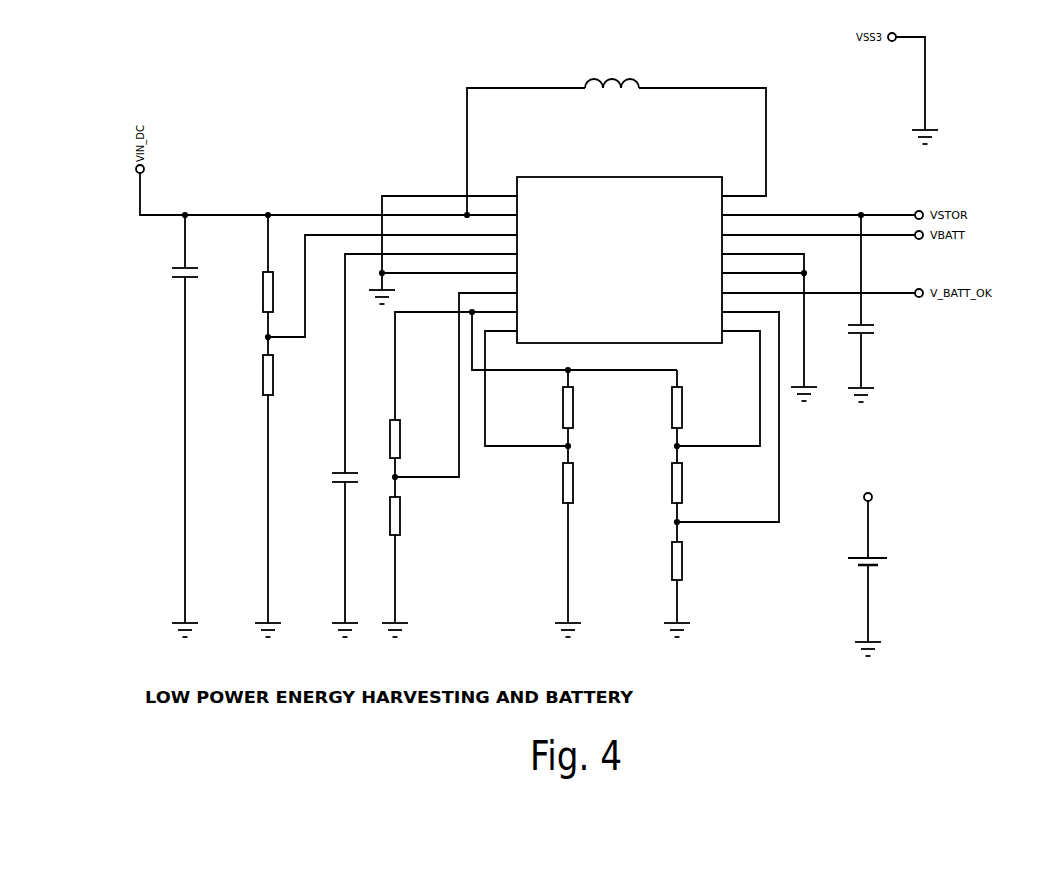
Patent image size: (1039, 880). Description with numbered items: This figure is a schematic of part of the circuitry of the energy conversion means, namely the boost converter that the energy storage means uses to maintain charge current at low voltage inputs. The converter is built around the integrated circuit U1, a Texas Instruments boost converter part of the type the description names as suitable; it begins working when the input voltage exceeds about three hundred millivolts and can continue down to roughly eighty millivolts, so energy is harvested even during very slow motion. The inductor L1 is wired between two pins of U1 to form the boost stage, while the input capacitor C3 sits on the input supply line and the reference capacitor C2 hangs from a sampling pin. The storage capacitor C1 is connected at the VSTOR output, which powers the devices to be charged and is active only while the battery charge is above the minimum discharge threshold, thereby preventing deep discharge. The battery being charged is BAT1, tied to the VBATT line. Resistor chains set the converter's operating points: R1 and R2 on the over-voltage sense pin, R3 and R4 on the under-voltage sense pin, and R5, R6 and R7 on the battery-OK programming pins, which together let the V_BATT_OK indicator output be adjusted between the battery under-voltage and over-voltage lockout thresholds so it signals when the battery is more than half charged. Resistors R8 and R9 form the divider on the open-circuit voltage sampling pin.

The BQ25504RGTT energy harvesting boost charger IC U1 is at (620, 258).
The inductor ELL8PG220N L1 is at (616, 133).
The storage capacitor CSTOR 22uF C1 is at (880, 308).
The reference capacitor CREF 10nF C2 is at (325, 548).
The input capacitor CIN 22uF C3 is at (163, 426).
The resistor ROV2 5.62M R1 is at (412, 458).
The resistor ROV1 4.42M R2 is at (408, 567).
The resistor RUV2 5.12M R3 is at (585, 416).
The resistor RUV1 3.83M R4 is at (581, 550).
The resistor ROK3 542K R5 is at (693, 416).
The resistor ROK2 5.12M R6 is at (695, 502).
The resistor ROK1 3.32M R7 is at (691, 589).
The resistor ROC2 4.42M R8 is at (241, 276).
The resistor ROC1 15.62M R9 is at (285, 487).
The battery 3.6V 150mAh BAT1 is at (902, 552).